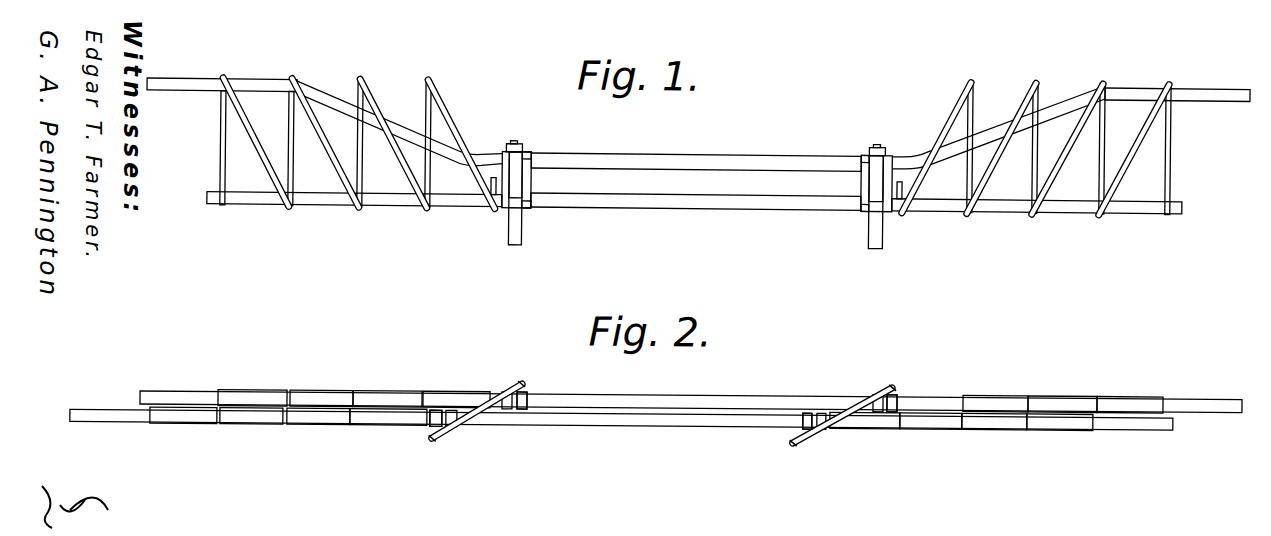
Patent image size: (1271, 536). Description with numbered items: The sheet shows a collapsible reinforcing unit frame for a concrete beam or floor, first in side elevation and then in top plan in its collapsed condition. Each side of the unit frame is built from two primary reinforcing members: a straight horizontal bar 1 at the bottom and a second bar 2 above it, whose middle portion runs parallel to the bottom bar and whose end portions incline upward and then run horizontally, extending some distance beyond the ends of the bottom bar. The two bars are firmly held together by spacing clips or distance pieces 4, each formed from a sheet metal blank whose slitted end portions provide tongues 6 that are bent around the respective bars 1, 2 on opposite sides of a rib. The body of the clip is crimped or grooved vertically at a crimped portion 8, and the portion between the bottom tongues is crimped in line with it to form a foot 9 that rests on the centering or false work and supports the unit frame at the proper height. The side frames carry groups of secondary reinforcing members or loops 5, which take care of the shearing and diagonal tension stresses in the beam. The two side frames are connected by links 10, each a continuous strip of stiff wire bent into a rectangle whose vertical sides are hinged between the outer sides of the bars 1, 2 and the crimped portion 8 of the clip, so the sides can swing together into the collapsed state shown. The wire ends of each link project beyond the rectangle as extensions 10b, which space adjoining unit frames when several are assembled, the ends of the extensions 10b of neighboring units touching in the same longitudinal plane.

In FIG. 1, the straight horizontal bar 1 is at (746, 197).
In FIG. 1, the second bar 2 is at (748, 151).
In FIG. 2, the second bar 2 is at (678, 416).
In FIG. 1, the spacing clips or distance pieces 4 is at (533, 180).
In FIG. 1, the secondary reinforcing members or loops 5 is at (276, 110).
In FIG. 2, the secondary reinforcing members or loops 5 is at (350, 396).
In FIG. 1, the tongues 6 is at (530, 150).
In FIG. 2, the tongues 6 is at (452, 406).
In FIG. 1, the crimped or grooved portion 8 is at (515, 186).
In FIG. 2, the crimped or grooved portion 8 is at (440, 426).
In FIG. 1, the foot 9 is at (513, 236).
In FIG. 1, the links 10 is at (511, 139).
In FIG. 2, the links 10 is at (470, 404).
In FIG. 2, the extensions 10b is at (522, 378).